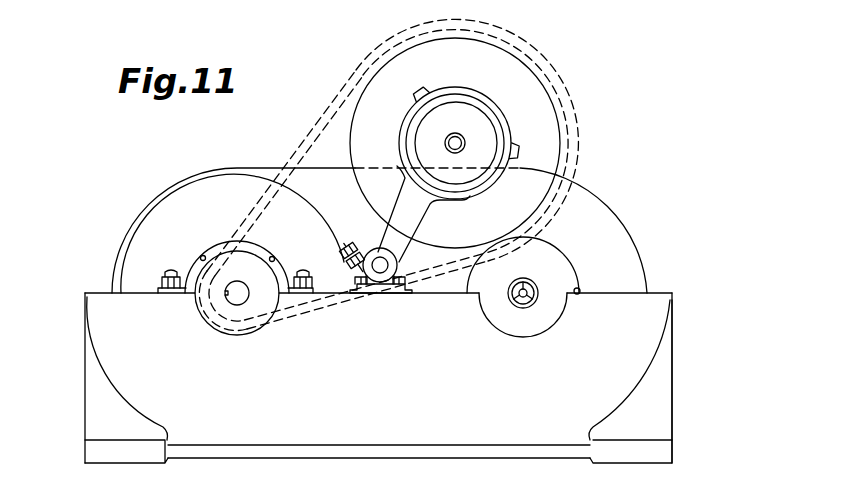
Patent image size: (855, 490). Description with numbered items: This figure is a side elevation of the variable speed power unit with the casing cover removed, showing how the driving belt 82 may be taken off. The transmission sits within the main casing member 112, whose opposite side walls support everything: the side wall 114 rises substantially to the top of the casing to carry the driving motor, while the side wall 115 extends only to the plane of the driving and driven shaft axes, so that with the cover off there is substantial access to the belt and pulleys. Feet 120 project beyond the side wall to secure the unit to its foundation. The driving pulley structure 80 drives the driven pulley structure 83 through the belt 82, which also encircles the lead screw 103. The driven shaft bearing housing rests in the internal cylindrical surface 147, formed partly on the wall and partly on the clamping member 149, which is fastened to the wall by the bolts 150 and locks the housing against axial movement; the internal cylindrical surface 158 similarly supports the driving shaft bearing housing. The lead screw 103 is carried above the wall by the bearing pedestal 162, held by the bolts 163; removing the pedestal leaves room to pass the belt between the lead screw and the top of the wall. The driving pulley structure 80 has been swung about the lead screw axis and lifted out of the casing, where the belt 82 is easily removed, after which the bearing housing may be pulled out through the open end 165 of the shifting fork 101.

The driving pulley structure 80 is at (360, 95).
The belt 82 is at (310, 137).
The driven pulley structure 83 is at (140, 226).
The shifting fork 101 is at (390, 213).
The lead screw 103 is at (397, 263).
The main casing member 112 is at (672, 345).
The side wall 114 is at (613, 210).
The side wall 115 is at (340, 369).
The feet 120 is at (93, 437).
The internal cylindrical surface 147 is at (210, 330).
The clamping member 149 is at (210, 242).
The bolts 150 is at (167, 272).
The internal cylindrical surface 158 is at (560, 318).
The bearing pedestal 162 is at (408, 292).
The bolts 163 is at (355, 278).
The open end 165 is at (428, 93).